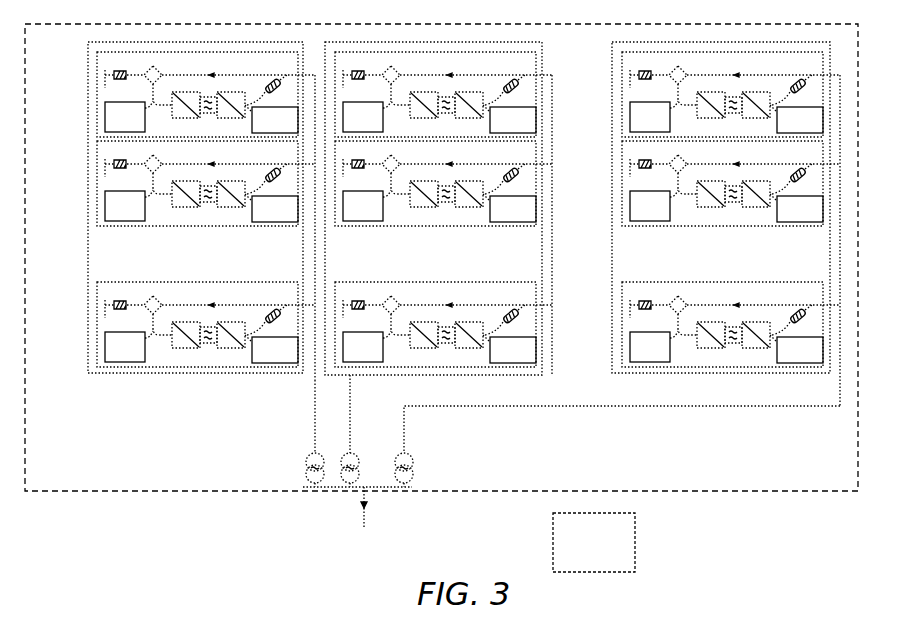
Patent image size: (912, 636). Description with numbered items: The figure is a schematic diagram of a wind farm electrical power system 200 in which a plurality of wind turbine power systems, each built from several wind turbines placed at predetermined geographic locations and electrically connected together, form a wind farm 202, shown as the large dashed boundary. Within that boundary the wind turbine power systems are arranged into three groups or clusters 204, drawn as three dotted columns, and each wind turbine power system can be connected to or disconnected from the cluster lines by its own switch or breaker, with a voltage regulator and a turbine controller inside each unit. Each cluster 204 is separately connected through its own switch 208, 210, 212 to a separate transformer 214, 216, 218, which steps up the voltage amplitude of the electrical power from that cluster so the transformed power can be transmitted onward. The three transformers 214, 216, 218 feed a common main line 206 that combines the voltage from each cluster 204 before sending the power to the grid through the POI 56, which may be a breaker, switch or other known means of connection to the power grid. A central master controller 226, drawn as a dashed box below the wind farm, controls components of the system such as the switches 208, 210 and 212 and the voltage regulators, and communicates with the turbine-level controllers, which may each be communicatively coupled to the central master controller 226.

The POI 56 is at (369, 506).
The wind farm electrical power system 200 is at (441, 310).
The wind farm 202 is at (733, 492).
The cluster 204 is at (781, 423).
The main line 206 is at (330, 488).
The switch 208 is at (301, 423).
The switch 210 is at (343, 420).
The switch 212 is at (400, 429).
The transformer 214 is at (305, 458).
The transformer 216 is at (358, 455).
The transformer 218 is at (412, 455).
The central master controller 226 is at (594, 542).